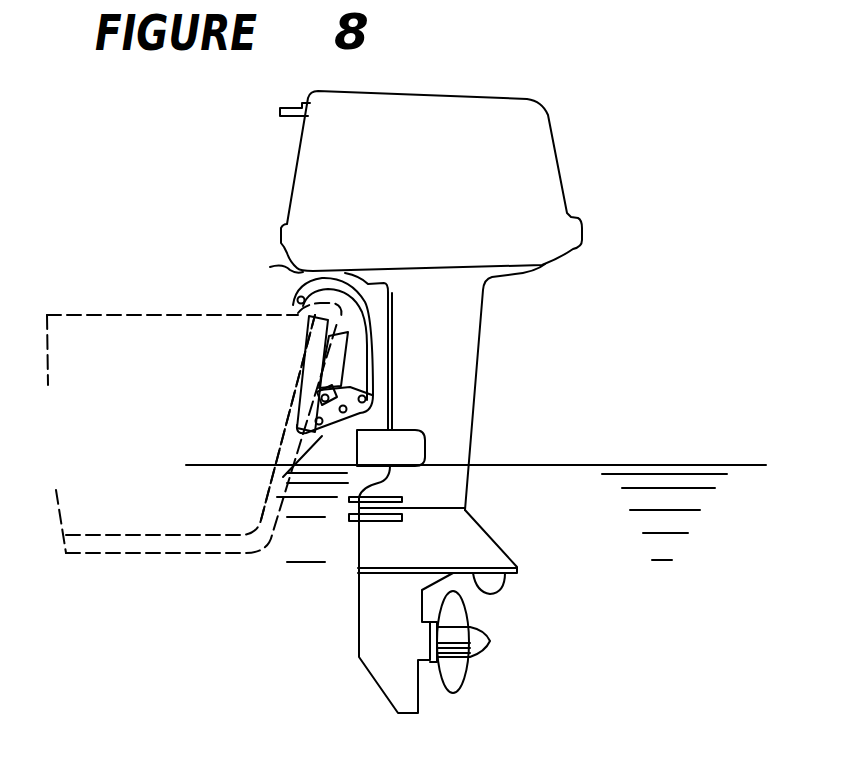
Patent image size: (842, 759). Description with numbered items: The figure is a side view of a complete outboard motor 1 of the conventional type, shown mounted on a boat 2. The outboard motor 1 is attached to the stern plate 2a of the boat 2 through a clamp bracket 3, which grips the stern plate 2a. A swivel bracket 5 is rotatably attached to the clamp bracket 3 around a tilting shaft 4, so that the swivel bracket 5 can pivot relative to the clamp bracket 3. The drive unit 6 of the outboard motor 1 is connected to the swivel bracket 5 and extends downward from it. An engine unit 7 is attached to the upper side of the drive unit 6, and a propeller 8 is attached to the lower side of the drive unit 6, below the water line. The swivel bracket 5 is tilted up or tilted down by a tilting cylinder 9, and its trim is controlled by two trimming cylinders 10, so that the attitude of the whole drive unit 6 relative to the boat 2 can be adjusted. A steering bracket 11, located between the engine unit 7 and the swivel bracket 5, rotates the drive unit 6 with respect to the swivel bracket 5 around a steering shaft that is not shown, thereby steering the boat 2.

The outboard motor 1 is at (407, 402).
The boat 2 is at (105, 315).
The stern plate 2a is at (282, 433).
The clamp bracket 3 is at (303, 340).
The tilting shaft 4 is at (297, 300).
The swivel bracket 5 is at (372, 413).
The drive unit 6 is at (448, 355).
The engine unit 7 is at (542, 212).
The propeller 8 is at (465, 678).
The tilting cylinder 9 is at (322, 372).
The trimming cylinder 10 is at (283, 477).
The steering bracket 11 is at (300, 271).